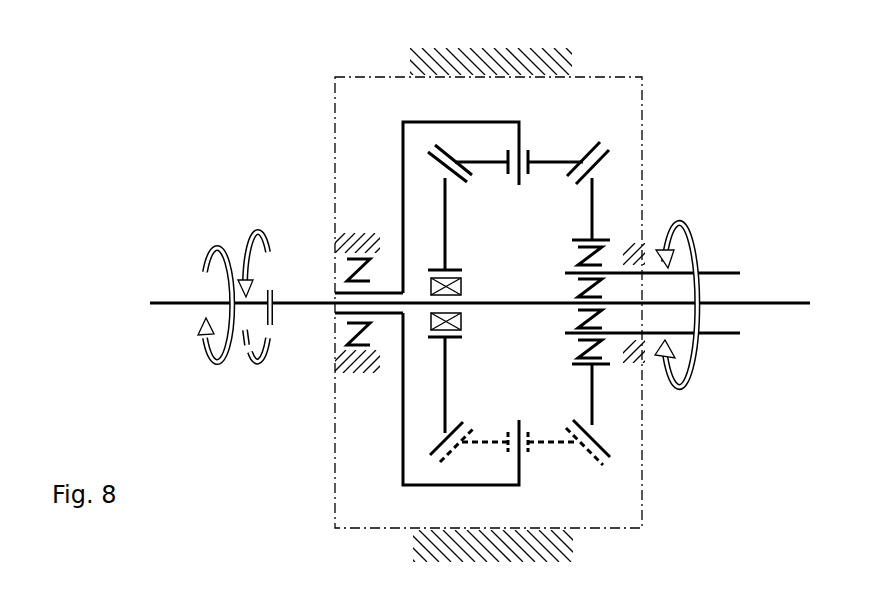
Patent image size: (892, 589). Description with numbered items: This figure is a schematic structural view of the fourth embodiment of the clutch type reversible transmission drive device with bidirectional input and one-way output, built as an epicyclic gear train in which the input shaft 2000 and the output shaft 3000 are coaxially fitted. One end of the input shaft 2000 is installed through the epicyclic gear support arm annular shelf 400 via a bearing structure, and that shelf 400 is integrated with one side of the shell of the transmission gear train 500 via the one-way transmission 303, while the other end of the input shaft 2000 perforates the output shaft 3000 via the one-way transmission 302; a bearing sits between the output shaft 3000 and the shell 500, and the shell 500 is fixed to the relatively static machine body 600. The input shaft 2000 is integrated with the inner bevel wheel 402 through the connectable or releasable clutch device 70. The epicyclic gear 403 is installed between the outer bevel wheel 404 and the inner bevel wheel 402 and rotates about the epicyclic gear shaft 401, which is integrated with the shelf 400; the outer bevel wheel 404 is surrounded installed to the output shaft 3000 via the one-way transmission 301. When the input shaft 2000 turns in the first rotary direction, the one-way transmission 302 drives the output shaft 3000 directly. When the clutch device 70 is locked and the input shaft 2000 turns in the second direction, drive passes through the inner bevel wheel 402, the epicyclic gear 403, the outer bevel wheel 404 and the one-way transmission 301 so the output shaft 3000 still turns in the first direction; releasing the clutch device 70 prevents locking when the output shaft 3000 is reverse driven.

The connectable or releasable clutch device 70 is at (463, 283).
The one-way transmission 301 is at (573, 252).
The one-way transmission 302 is at (572, 315).
The one-way transmission 303 is at (340, 272).
The epicyclic gear support arm annular shelf 400 is at (440, 487).
The epicyclic gear shaft 401 is at (521, 148).
The inner bevel wheel 402 is at (463, 423).
The epicyclic gear 403 is at (592, 148).
The outer bevel wheel 404 is at (604, 162).
The shell of the transmission gear train 500 is at (333, 155).
The machine body 600 is at (491, 68).
The input shaft 2000 is at (177, 300).
The output shaft 3000 is at (718, 272).